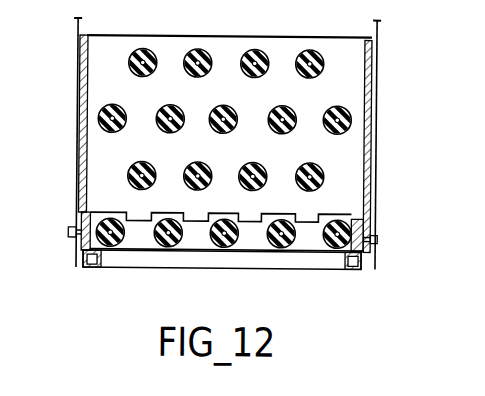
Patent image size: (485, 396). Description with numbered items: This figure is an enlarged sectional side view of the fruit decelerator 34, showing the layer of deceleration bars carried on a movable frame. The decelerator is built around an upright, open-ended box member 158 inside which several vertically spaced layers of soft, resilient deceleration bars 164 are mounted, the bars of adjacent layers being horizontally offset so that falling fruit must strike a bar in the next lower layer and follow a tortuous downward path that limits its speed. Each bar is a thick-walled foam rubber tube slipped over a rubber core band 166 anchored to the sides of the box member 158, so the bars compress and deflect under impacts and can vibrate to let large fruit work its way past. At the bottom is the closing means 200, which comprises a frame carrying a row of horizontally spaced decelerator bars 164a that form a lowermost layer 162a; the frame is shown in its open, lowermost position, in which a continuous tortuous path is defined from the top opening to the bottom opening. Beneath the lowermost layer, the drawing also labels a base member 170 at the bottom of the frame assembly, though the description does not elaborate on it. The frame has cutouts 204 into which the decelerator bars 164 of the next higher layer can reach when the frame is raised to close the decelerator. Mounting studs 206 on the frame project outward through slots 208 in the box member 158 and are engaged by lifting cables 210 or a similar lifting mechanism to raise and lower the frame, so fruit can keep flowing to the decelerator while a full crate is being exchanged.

The decelerator 34 is at (378, 165).
The box member 158 is at (373, 134).
The lowermost layer 162a is at (89, 210).
The deceleration bars 164 is at (226, 120).
The decelerator bars 164a is at (223, 279).
The rubber core bands 166 is at (224, 189).
The base plate 170 is at (85, 262).
The closing means 200 is at (202, 249).
The cutouts 204 is at (311, 222).
The mounting studs 206 is at (379, 238).
The slots 208 is at (366, 208).
The lifting cables 210 is at (79, 154).